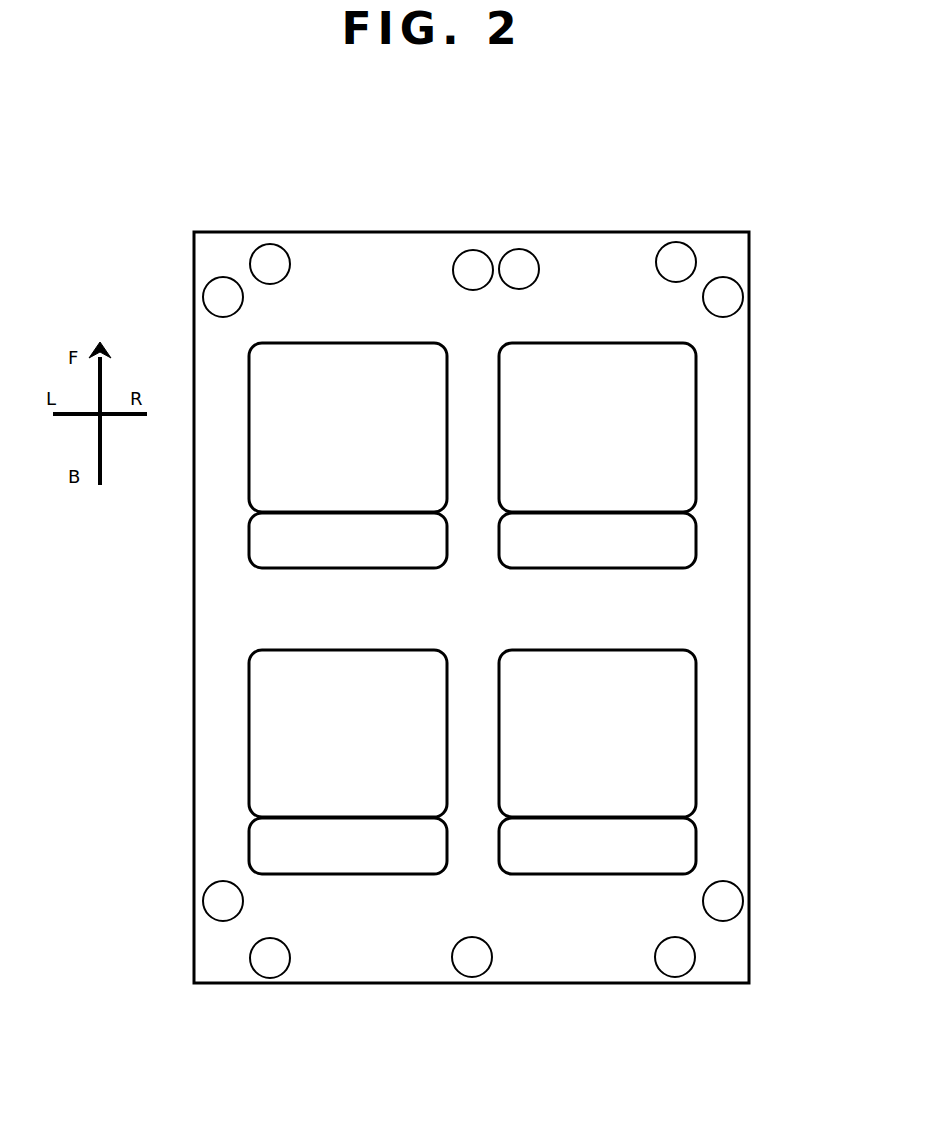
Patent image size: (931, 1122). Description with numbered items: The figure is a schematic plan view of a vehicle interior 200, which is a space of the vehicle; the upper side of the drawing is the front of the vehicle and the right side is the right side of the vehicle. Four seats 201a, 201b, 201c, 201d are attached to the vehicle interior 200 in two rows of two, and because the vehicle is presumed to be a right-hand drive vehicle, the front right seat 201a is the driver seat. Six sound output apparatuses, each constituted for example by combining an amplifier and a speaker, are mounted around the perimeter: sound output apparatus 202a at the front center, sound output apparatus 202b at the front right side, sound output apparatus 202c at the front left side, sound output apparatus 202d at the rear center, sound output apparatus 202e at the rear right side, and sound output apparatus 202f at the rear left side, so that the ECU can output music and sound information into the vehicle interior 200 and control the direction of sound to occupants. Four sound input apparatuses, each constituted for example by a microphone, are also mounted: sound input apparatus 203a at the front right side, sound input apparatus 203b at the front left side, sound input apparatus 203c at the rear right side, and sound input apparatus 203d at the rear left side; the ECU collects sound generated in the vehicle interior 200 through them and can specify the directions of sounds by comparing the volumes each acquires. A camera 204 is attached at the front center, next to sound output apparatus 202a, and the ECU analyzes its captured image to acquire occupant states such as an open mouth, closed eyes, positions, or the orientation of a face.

The vehicle interior 200 is at (402, 231).
The seat 201a is at (600, 342).
The seat 201b is at (350, 342).
The seat 201c is at (600, 649).
The seat 201d is at (349, 649).
The sound output apparatus 202a is at (471, 250).
The sound output apparatus 202b is at (739, 288).
The sound output apparatus 202c is at (206, 290).
The sound output apparatus 202d is at (471, 978).
The sound output apparatus 202e is at (739, 888).
The sound output apparatus 202f is at (206, 893).
The sound input apparatus 203a is at (677, 242).
The sound input apparatus 203b is at (270, 244).
The sound input apparatus 203c is at (677, 978).
The sound input apparatus 203d is at (272, 978).
The camera 204 is at (527, 252).